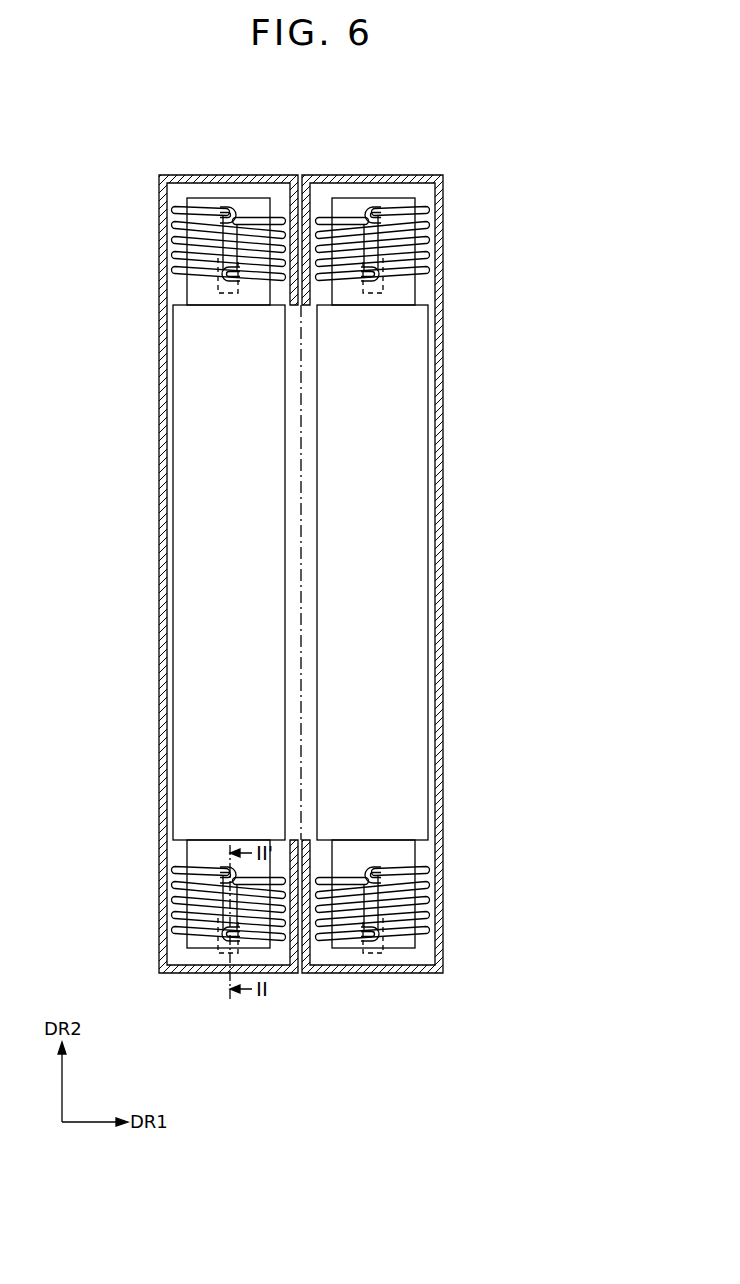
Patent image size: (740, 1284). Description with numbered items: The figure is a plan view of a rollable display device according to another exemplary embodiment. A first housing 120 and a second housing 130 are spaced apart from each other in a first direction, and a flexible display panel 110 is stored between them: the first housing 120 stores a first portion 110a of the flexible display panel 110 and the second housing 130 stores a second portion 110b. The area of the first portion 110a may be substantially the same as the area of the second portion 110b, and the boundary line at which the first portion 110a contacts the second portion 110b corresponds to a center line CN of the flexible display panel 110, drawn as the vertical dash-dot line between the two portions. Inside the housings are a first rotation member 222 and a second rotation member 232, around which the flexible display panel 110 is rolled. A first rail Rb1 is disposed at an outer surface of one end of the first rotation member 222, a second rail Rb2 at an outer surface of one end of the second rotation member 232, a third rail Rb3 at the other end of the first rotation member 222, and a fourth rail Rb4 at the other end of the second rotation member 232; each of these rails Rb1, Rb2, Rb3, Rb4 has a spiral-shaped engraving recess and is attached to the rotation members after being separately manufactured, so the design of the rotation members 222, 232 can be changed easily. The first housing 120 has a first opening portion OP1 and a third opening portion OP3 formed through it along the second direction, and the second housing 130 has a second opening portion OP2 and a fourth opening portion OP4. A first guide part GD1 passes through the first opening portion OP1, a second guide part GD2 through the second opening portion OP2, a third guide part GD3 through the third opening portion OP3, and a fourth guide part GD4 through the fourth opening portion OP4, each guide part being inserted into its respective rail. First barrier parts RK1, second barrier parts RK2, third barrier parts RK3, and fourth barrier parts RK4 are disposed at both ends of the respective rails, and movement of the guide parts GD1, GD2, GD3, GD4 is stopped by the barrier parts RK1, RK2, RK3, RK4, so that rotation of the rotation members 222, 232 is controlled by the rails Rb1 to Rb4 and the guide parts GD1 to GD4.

The flexible display panel 110 is at (340, 608).
The first portion 110a is at (185, 565).
The second portion 110b is at (418, 565).
The first housing 120 is at (277, 973).
The second housing 130 is at (405, 973).
The first rotation member 222 is at (203, 847).
The second rotation member 232 is at (370, 847).
The center line CN is at (301, 412).
The first barrier parts RK1 is at (225, 868).
The second barrier parts RK2 is at (352, 935).
The third barrier parts RK3 is at (246, 270).
The fourth barrier parts RK4 is at (356, 270).
The first rail Rb1 is at (178, 872).
The second rail Rb2 is at (424, 872).
The third rail Rb3 is at (178, 211).
The fourth rail Rb4 is at (425, 211).
The first opening portion OP1 is at (180, 898).
The second opening portion OP2 is at (422, 898).
The third opening portion OP3 is at (180, 240).
The fourth opening portion OP4 is at (422, 240).
The first guide part GD1 is at (218, 918).
The second guide part GD2 is at (383, 918).
The third guide part GD3 is at (218, 258).
The fourth guide part GD4 is at (383, 258).